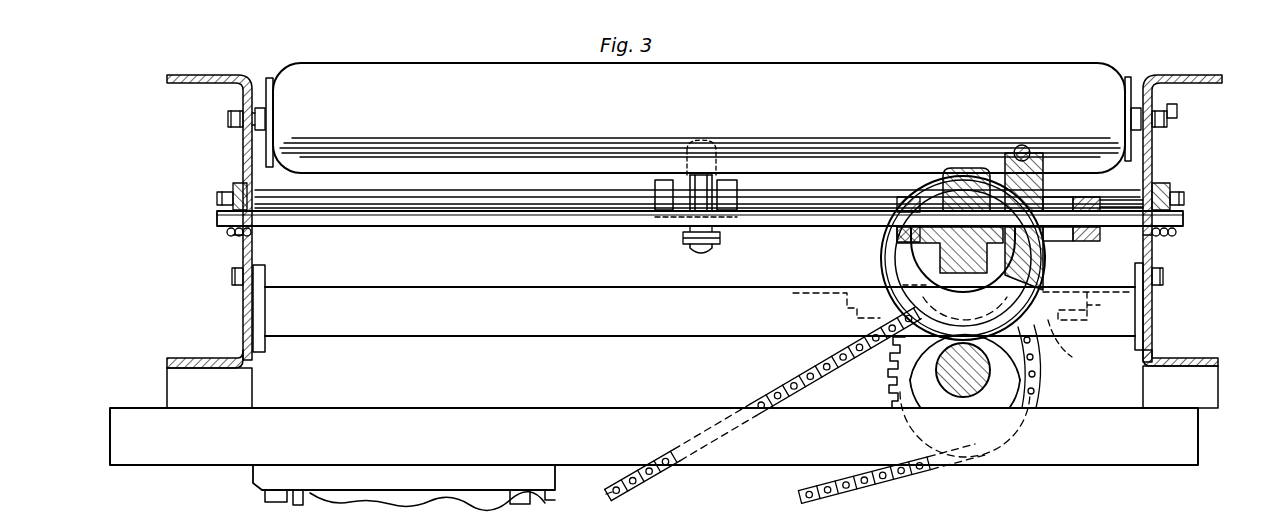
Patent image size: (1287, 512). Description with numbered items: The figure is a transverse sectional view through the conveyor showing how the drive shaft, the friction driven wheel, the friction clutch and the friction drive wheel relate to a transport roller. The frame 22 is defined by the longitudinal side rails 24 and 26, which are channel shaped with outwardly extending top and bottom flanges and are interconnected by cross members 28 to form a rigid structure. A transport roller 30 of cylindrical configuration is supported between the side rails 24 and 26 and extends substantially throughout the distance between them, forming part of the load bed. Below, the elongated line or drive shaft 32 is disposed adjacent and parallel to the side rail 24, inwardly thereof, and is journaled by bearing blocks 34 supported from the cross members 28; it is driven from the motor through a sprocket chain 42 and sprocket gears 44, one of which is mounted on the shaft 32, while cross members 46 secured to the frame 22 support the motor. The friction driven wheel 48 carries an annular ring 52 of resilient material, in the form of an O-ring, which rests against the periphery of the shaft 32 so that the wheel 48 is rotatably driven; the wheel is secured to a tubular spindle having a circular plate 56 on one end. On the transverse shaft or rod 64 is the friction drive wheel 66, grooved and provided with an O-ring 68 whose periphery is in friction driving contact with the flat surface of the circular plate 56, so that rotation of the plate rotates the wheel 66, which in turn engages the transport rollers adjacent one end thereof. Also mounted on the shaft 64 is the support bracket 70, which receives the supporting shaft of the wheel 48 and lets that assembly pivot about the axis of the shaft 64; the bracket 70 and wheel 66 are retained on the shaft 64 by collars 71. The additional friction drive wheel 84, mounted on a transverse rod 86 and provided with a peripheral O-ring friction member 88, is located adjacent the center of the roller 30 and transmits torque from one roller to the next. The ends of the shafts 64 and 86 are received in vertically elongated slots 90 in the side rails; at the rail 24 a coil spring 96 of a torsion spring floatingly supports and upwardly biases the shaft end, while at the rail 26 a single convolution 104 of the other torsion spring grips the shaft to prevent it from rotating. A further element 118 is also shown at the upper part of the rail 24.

The frame 22 is at (1193, 352).
The side rail 24 is at (1152, 160).
The side rail 26 is at (243, 152).
The cross member 28 is at (578, 324).
The transport roller 30 is at (893, 86).
The drive shaft 32 is at (985, 390).
The bearing block 34 is at (1057, 338).
The sprocket chain 42 is at (855, 480).
The sprocket gear 44 is at (893, 372).
The cross member 46 is at (228, 443).
The friction driven wheel 48 is at (896, 262).
The annular ring 52 is at (893, 246).
The circular plate 56 is at (925, 262).
The transverse shaft 64 is at (503, 207).
The friction drive wheel 66 is at (1036, 170).
The O-ring 68 is at (1027, 146).
The support bracket 70 is at (970, 170).
The collar 71 is at (905, 198).
The friction drive wheel 84 is at (720, 190).
The transverse rod 86 is at (353, 208).
The O-ring friction member 88 is at (698, 190).
The slot 90 is at (241, 236).
The coil spring 96 is at (1170, 190).
The convolution 104 is at (240, 182).
The bolt 118 is at (1177, 112).